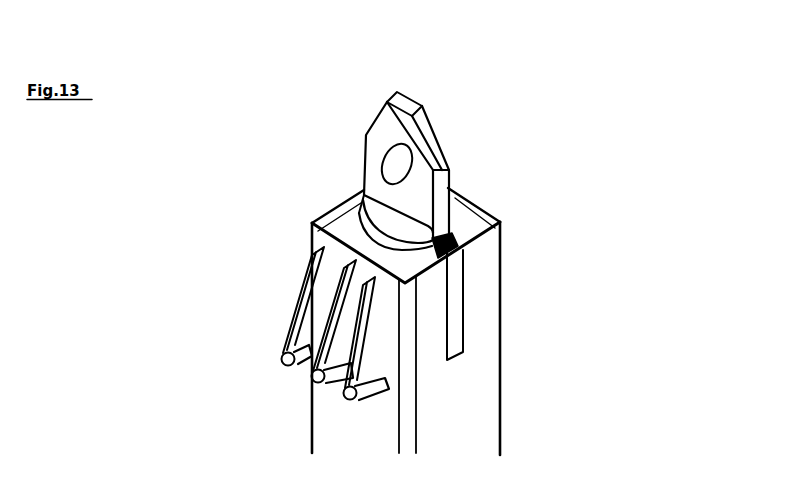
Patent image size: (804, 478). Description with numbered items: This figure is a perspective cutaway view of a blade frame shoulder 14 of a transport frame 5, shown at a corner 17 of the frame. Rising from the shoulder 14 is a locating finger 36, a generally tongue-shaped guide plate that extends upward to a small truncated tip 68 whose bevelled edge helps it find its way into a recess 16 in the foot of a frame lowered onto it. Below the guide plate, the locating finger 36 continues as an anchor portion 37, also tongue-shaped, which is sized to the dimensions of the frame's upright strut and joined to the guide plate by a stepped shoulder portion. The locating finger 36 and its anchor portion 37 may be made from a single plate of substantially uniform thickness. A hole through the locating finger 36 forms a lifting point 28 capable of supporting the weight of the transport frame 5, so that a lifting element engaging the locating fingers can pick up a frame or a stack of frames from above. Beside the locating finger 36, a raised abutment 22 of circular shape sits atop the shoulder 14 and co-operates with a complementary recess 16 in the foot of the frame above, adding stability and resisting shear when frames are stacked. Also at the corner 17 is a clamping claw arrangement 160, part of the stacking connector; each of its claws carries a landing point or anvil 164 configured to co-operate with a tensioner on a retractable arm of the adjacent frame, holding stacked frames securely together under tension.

The transport frame 5 is at (582, 146).
The shoulder 14 is at (480, 193).
The recess 16 is at (290, 330).
The corner 17 is at (622, 222).
The raised abutment 22 is at (360, 216).
The lifting point 28 is at (395, 166).
The locating finger 36 is at (363, 169).
The anchor portion 37 is at (453, 330).
The truncated tip 68 is at (408, 100).
The clamping claw arrangement 160 is at (345, 340).
The anvil 164 is at (360, 397).